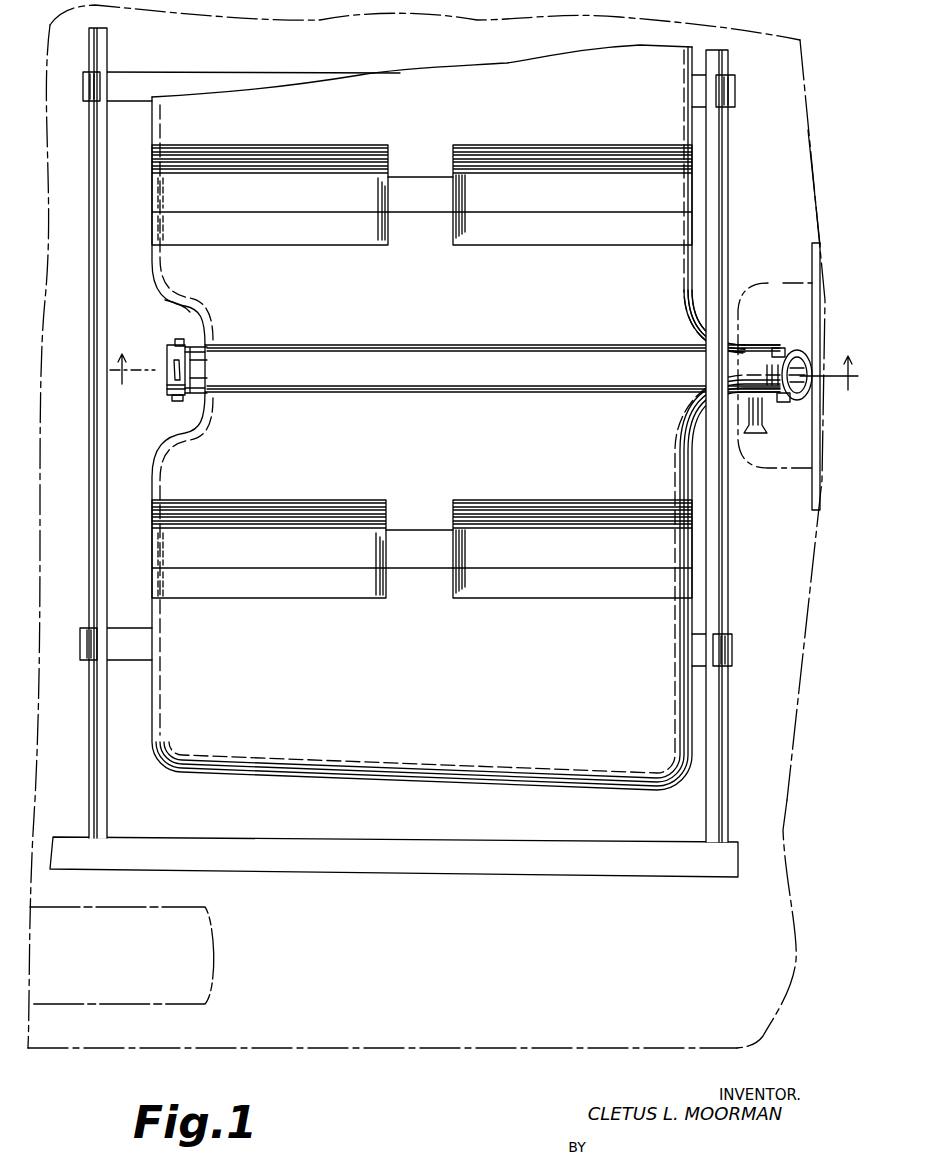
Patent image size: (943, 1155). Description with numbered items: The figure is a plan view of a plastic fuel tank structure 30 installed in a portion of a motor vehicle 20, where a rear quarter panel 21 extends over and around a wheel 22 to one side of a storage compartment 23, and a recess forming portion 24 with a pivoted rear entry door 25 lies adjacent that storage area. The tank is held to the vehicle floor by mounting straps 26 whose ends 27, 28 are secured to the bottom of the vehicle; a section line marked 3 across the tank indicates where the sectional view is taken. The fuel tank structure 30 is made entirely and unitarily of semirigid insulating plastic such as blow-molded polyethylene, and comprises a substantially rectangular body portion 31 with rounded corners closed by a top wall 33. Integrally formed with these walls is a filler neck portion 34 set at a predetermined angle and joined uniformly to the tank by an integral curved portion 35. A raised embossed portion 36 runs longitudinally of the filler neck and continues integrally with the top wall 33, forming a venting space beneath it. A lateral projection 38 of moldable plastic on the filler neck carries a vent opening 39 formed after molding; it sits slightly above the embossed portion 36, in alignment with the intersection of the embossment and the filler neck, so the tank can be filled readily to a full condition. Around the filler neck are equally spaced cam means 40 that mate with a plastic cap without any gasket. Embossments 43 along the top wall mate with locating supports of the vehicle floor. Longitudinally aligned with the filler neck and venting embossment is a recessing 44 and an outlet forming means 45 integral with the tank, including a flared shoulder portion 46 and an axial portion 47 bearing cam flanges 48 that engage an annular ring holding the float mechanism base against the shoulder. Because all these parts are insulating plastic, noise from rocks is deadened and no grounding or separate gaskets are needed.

The motor vehicle 20 is at (795, 985).
The rear quarter panel 21 is at (400, 1048).
The wheel 22 is at (222, 945).
The storage compartment 23 is at (795, 742).
The recess forming portion 24 is at (783, 283).
The rear entry door 25 is at (810, 242).
The mounting strap 26 is at (184, 72).
The strap end 27 is at (86, 101).
The strap end 28 is at (736, 90).
The plastic fuel tank structure 30 is at (290, 776).
The body portion 31 is at (692, 730).
The top wall 33 is at (662, 680).
The filler neck portion 34 is at (752, 346).
The integral curved portion 35 is at (700, 312).
The embossed portion 36 is at (522, 346).
The lateral projection 38 is at (766, 422).
The vent opening 39 is at (752, 436).
The cam means 40 is at (778, 350).
The embossments 43 is at (297, 200).
The recessing 44 is at (180, 305).
The outlet forming means 45 is at (210, 370).
The flanged shoulder portion 46 is at (207, 365).
The axial portion 47 is at (170, 355).
The cam flanges 48 is at (180, 345).
The section line 3- 3 is at (484, 383).